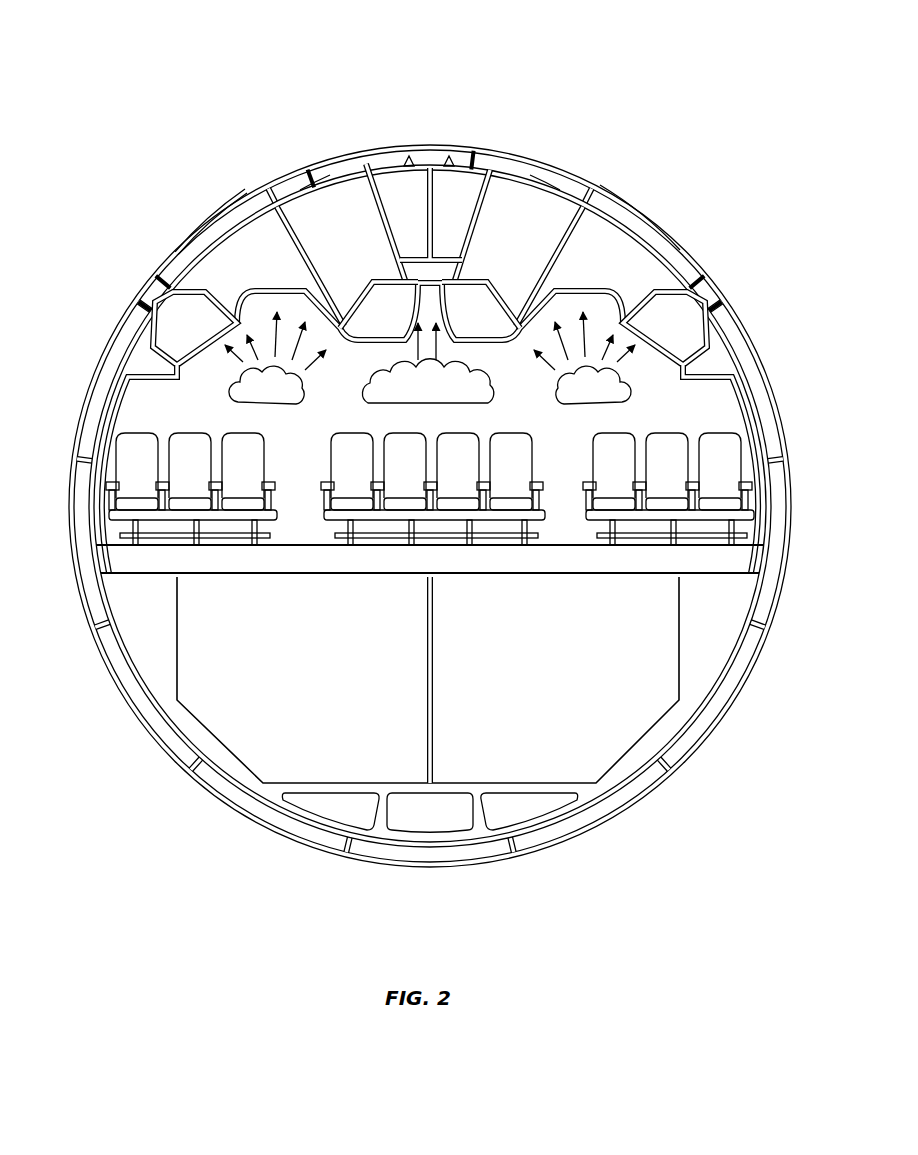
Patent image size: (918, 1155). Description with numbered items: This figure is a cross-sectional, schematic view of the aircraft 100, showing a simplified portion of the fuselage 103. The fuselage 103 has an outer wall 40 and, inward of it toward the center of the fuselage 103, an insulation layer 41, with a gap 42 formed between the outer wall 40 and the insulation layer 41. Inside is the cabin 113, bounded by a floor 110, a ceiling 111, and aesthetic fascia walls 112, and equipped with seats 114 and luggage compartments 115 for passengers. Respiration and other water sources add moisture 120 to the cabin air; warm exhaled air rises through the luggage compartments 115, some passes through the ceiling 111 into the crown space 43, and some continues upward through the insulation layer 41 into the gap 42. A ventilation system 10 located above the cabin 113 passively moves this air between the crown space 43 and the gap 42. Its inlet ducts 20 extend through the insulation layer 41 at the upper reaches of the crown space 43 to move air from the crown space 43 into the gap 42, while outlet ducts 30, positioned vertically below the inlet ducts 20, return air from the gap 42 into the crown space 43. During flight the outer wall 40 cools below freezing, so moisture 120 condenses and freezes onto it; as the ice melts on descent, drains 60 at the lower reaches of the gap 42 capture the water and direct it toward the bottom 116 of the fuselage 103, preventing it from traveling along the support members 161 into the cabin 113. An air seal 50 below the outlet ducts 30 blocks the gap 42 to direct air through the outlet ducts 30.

The aircraft 100 is at (134, 128).
The ventilation system 10 is at (336, 226).
The support members 161 is at (456, 175).
The inlet ducts 20 is at (306, 188).
The outer wall 40 is at (344, 160).
The gap 42 is at (186, 231).
The insulation layer 41 is at (194, 244).
The outlet ducts 30 is at (183, 264).
The drains 60 is at (157, 281).
The air seal 50 is at (141, 300).
The cabin 113 is at (180, 377).
The seats 114 is at (188, 442).
The luggage compartments 115 is at (430, 323).
The moisture 120 is at (290, 392).
The crown space 43 is at (527, 222).
The fuselage 103 is at (671, 230).
The ceiling 111 is at (671, 266).
The aesthetic fascia walls 112 is at (728, 398).
The floor 110 is at (740, 568).
The bottom 116 is at (422, 850).